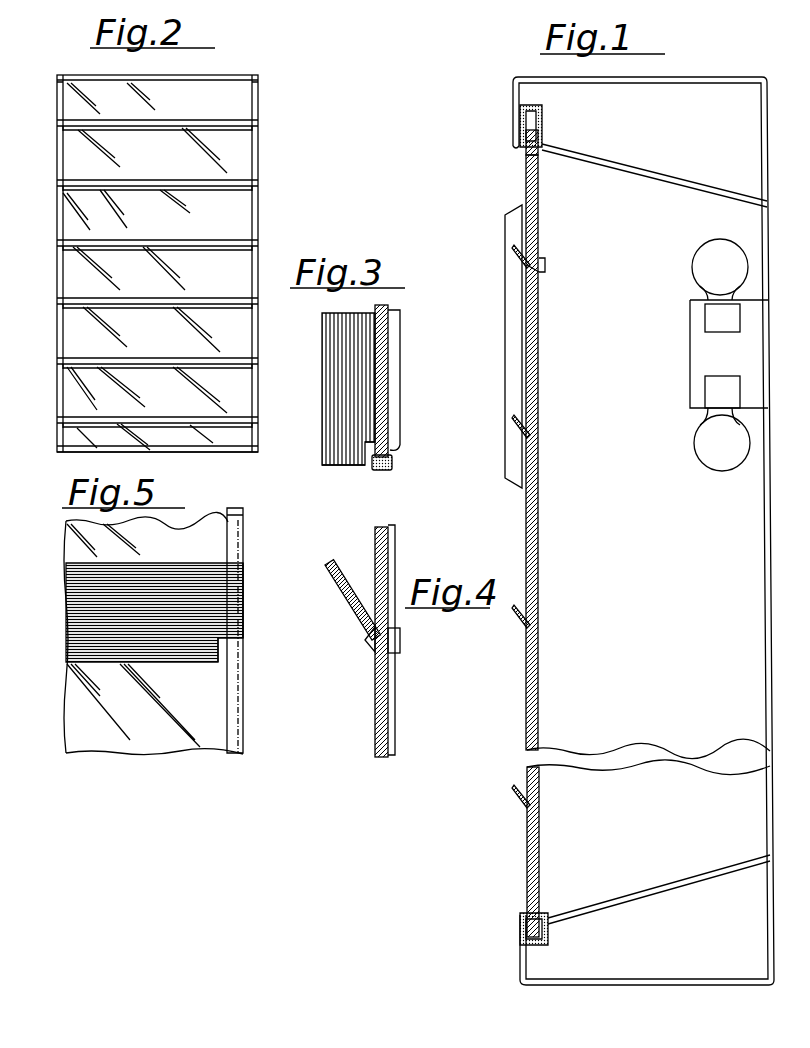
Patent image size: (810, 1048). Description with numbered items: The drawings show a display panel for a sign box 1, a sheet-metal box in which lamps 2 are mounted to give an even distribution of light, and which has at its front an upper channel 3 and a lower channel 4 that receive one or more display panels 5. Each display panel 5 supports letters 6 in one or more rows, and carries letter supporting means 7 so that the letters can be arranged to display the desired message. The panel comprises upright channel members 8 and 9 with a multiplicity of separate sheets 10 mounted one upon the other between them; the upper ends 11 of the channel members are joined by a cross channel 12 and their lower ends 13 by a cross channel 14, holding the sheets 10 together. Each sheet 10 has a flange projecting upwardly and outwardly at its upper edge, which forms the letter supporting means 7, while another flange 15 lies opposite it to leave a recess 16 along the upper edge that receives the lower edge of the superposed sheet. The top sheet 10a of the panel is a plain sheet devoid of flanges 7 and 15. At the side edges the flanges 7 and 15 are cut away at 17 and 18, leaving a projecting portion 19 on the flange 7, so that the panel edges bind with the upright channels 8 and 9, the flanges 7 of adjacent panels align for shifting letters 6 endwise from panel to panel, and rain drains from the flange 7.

In FIG. 1, the sign box 1 is at (625, 991).
In FIG. 1, the lamps 2 is at (703, 250).
In FIG. 4, the upper channel 3 is at (335, 532).
In FIG. 1, the upper channel 3 is at (528, 116).
In FIG. 3, the lower channel 4 is at (322, 452).
In FIG. 1, the lower channel 4 is at (545, 940).
In FIG. 2, the display panel 5 is at (260, 160).
In FIG. 1, the letters 6 is at (505, 298).
In FIG. 2, the letter supporting means 7 is at (74, 292).
In FIG. 5, the letter supporting means 7 is at (76, 625).
In FIG. 3, the letter supporting means 7 is at (340, 360).
In FIG. 4, the letter supporting means 7 is at (342, 588).
In FIG. 1, the letter supporting means 7 is at (512, 262).
In FIG. 2, the upright channel member 8 is at (57, 215).
In FIG. 2, the upright channel member 9 is at (258, 210).
In FIG. 5, the upright channel member 9 is at (243, 530).
In FIG. 3, the upright channel member 9 is at (380, 470).
In FIG. 2, the sheets 10 is at (78, 392).
In FIG. 5, the sheets 10 is at (72, 697).
In FIG. 3, the sheets 10 is at (381, 381).
In FIG. 4, the sheets 10 is at (390, 695).
In FIG. 1, the sheets 10 is at (540, 525).
In FIG. 2, the top sheet 10a is at (243, 100).
In FIG. 1, the top sheet 10a is at (540, 175).
In FIG. 2, the upper ends 11 is at (63, 75).
In FIG. 2, the cross channel 12 is at (212, 76).
In FIG. 2, the lower ends 13 is at (60, 452).
In FIG. 2, the cross channel 14 is at (150, 452).
In FIG. 3, the flange 15 is at (396, 360).
In FIG. 4, the flange 15 is at (400, 645).
In FIG. 1, the flange 15 is at (546, 265).
In FIG. 1, the recess 16 is at (540, 274).
In FIG. 5, the cut-away portion 17 is at (218, 662).
In FIG. 3, the cut-away portion 17 is at (366, 440).
In FIG. 4, the cut-away portion 17 is at (366, 646).
In FIG. 3, the cut-away portion 18 is at (400, 440).
In FIG. 5, the projecting portion 19 is at (243, 592).
In FIG. 3, the projecting portion 19 is at (342, 466).